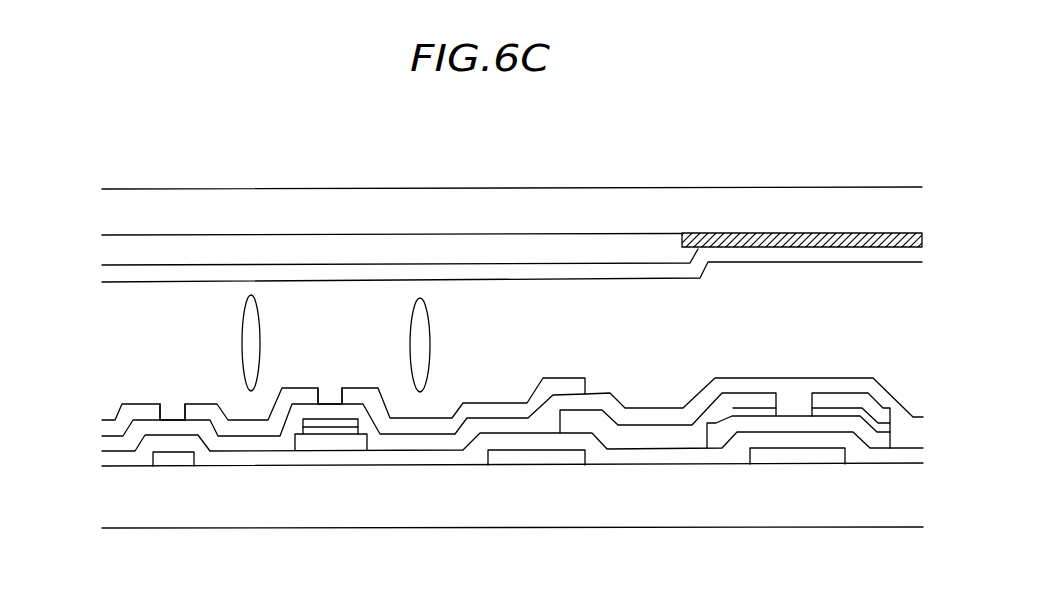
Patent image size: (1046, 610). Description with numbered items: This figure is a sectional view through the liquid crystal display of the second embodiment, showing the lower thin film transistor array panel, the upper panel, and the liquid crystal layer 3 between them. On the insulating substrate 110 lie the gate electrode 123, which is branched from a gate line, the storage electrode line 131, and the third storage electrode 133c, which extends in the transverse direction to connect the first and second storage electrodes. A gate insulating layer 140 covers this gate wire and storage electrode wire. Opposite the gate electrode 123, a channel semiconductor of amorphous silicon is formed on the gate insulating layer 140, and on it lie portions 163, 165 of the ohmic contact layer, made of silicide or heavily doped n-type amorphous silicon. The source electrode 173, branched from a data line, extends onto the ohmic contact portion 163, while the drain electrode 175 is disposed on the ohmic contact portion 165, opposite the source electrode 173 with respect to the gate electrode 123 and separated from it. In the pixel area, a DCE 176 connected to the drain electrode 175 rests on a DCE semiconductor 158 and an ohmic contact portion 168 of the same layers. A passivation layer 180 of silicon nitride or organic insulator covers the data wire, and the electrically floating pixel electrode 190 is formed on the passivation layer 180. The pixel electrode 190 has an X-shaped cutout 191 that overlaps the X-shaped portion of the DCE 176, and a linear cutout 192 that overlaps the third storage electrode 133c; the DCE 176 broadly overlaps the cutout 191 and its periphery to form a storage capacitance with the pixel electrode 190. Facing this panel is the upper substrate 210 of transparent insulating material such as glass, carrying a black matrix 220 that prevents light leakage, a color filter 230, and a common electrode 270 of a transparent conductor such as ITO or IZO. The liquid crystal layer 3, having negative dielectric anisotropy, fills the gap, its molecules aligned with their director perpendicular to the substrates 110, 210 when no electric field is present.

The liquid crystal layer 3 is at (120, 316).
The insulating substrate 110 is at (490, 510).
The gate electrode 123 is at (797, 455).
The storage electrode line 131 is at (537, 458).
The third storage electrode 133c is at (178, 462).
The gate insulating layer 140 is at (437, 458).
The DCE semiconductor 158 is at (342, 442).
The ohmic contact layer portion 168 is at (358, 432).
The DCE 176 is at (310, 424).
The ohmic contact layer portion 163 is at (832, 412).
The ohmic contact layer portion 165 is at (736, 400).
The source electrode 173 is at (884, 410).
The drain electrode 175 is at (679, 430).
The passivation layer 180 is at (247, 440).
The pixel electrode 190 is at (492, 401).
The X-shaped cutout 191 is at (330, 378).
The linear cutout 192 is at (173, 395).
The upper substrate 210 is at (511, 200).
The black matrix 220 is at (745, 240).
The color filter 230 is at (372, 245).
The common electrode 270 is at (276, 272).